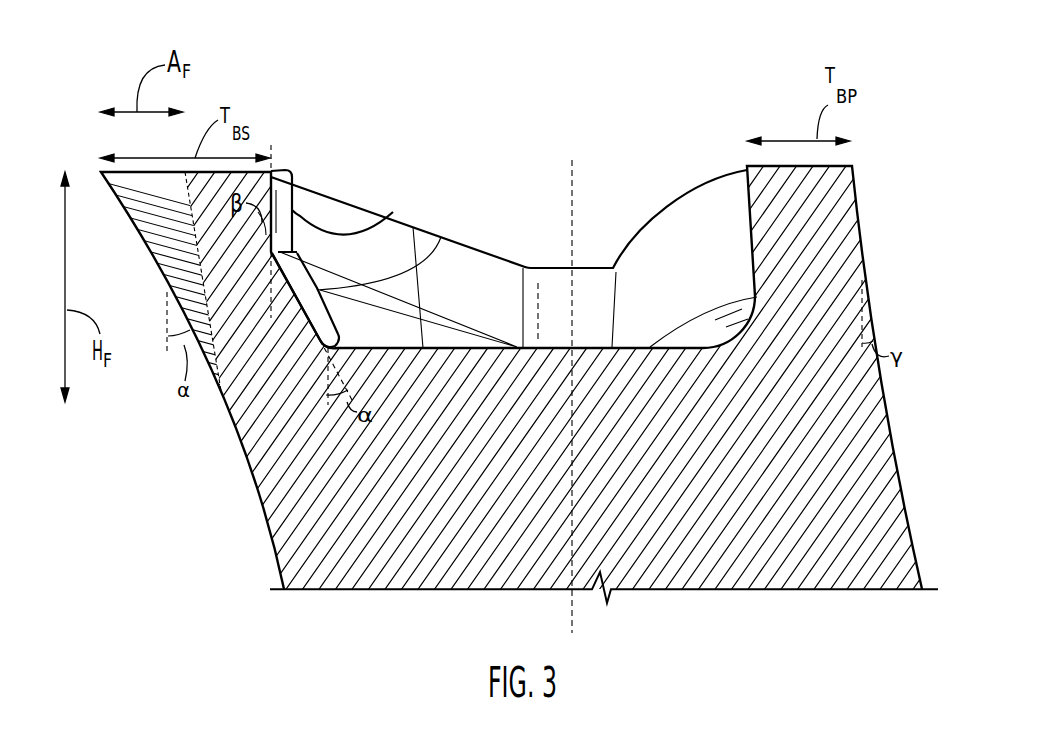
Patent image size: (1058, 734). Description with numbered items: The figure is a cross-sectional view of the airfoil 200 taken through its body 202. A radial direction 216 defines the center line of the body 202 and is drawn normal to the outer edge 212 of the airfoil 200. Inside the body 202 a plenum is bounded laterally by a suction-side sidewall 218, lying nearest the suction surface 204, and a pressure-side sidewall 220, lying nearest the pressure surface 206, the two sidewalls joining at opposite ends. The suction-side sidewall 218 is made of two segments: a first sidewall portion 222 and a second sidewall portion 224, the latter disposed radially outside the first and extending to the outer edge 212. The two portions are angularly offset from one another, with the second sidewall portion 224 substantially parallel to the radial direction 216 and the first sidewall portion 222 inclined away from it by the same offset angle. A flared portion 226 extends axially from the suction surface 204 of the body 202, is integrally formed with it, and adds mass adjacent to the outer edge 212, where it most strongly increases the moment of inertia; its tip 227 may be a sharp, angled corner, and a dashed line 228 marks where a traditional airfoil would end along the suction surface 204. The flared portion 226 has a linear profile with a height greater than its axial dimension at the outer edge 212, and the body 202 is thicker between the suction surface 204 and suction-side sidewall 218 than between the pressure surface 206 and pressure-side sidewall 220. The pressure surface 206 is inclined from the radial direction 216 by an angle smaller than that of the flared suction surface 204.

The airfoil 200 is at (875, 187).
The body 202 is at (278, 532).
The suction surface 204 is at (246, 450).
The pressure surface 206 is at (900, 493).
The outer edge 212 is at (780, 152).
The radial direction 216 is at (573, 607).
The suction-side sidewall 218 is at (332, 210).
The pressure-side sidewall 220 is at (747, 212).
The first sidewall portion 222 is at (441, 237).
The second sidewall portion 224 is at (376, 220).
The flared portion 226 is at (165, 280).
The tip 227 is at (100, 176).
The dashed line 228 is at (187, 190).